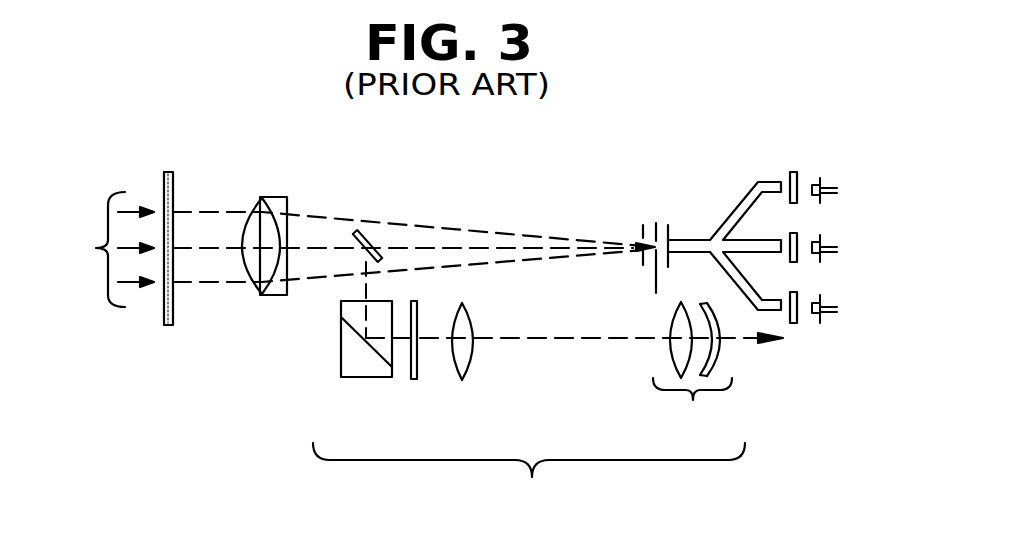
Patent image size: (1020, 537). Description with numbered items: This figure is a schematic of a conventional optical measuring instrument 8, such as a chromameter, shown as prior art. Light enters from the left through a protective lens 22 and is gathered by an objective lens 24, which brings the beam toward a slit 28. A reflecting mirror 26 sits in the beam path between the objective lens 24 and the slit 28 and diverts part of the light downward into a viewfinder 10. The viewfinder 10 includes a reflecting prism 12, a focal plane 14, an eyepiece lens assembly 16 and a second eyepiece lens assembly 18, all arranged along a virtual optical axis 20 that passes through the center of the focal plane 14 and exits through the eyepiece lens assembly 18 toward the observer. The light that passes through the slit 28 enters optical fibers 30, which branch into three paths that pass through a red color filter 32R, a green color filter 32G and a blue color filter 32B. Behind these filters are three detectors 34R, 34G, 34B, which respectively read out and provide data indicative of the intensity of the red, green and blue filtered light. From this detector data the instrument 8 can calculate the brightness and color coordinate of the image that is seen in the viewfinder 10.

The optical measuring instrument 8 is at (514, 226).
The viewfinder 10 is at (529, 476).
The reflecting prism 12 is at (348, 355).
The focal plane 14 is at (417, 319).
The eyepiece lens assembly 16 is at (474, 360).
The eyepiece lens assembly 18 is at (692, 366).
The virtual optical axis 20 is at (584, 302).
The protective lens 22 is at (174, 186).
The objective lens 24 is at (284, 197).
The reflecting mirror 26 is at (374, 235).
The slit 28 is at (643, 224).
The optical fibers 30 is at (698, 238).
The color filter 32R is at (793, 171).
The color filter 32G is at (797, 242).
The color filter 32B is at (797, 313).
The detector 34R is at (827, 190).
The detector 34G is at (830, 254).
The detector 34B is at (830, 316).